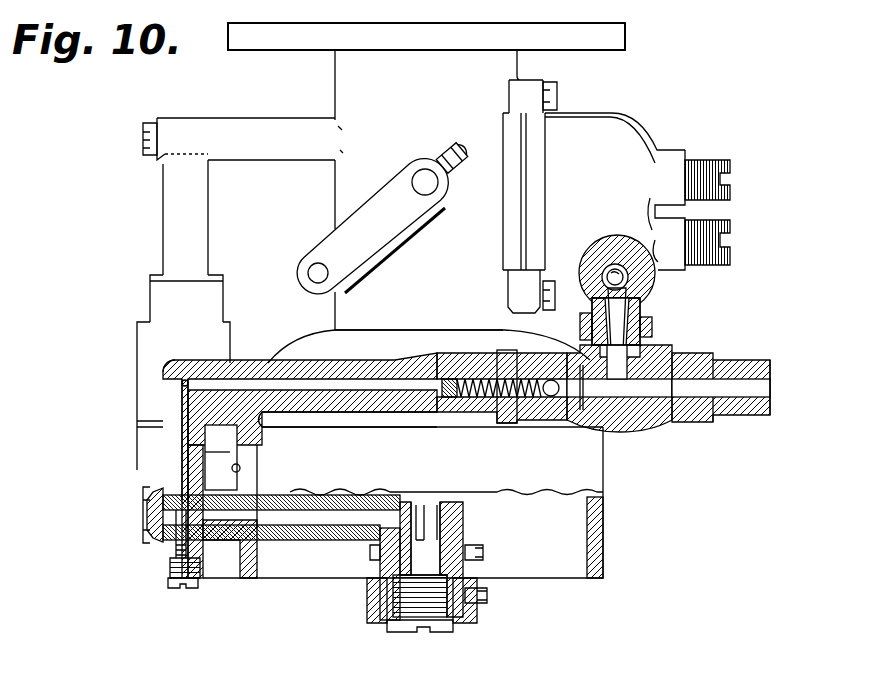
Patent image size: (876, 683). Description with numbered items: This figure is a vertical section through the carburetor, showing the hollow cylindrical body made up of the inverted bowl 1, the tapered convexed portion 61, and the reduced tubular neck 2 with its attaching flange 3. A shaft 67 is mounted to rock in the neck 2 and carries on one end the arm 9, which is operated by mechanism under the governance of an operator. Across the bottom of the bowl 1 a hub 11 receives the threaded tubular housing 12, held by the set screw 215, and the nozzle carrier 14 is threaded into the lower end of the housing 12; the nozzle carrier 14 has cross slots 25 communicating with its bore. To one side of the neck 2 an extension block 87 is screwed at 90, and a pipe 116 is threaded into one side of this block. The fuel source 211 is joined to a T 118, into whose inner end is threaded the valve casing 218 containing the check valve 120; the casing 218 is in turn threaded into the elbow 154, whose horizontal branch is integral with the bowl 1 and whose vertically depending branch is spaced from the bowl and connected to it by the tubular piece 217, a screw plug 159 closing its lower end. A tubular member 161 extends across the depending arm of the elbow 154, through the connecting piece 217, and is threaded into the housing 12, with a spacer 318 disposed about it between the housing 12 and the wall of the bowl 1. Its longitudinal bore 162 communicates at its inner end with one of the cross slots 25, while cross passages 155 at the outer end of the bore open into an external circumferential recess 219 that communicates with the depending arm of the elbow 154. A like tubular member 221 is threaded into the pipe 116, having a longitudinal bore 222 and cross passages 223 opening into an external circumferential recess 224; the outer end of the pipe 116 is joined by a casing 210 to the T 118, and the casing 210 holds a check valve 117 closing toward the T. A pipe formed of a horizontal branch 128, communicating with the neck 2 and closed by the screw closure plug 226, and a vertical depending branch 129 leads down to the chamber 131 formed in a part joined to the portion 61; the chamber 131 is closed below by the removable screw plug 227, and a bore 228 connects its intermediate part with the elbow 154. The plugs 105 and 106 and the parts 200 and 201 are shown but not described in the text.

The inverted bowl 1 is at (600, 493).
The reduced tubular neck 2 is at (350, 78).
The attaching flange 3 is at (247, 44).
The arm 9 is at (382, 230).
The hub 11 is at (373, 607).
The tubular housing 12 is at (458, 510).
The nozzle carrier 14 is at (432, 552).
The cross slots 25 is at (437, 505).
The tapered convexed portion 61 is at (297, 350).
The shaft 67 is at (422, 178).
The extension block 87 is at (628, 133).
The screw 90 is at (558, 100).
The threaded plug 105 is at (700, 160).
The threaded plug 106 is at (700, 240).
The pipe 116 is at (603, 247).
The check valve 117 is at (582, 332).
The T 118 is at (633, 413).
The check valve 120 is at (553, 413).
The horizontal branch 128 is at (262, 148).
The vertical depending branch 129 is at (178, 222).
The chamber 131 is at (212, 338).
The elbow 154 is at (338, 378).
The cross passages 155 is at (168, 500).
The screw plug 159 is at (170, 588).
The tubular member 161 is at (145, 503).
The longitudinal bore 162 is at (283, 510).
The block 200 is at (372, 556).
The screw 201 is at (488, 557).
The casing 210 is at (645, 342).
The source of liquid fuel supply 211 is at (760, 407).
The set screw 215 is at (487, 603).
The tubular piece 217 is at (227, 540).
The valve casing 218 is at (485, 360).
The external circumferential recess 219 is at (173, 553).
The tubular member 221 is at (633, 278).
The longitudinal bore 222 is at (630, 273).
The cross passages 223 is at (636, 305).
The external circumferential recess 224 is at (652, 257).
The screw closure plug 226 is at (140, 130).
The removable screw plug 227 is at (140, 433).
The bore 228 is at (162, 375).
The spacer 318 is at (323, 503).